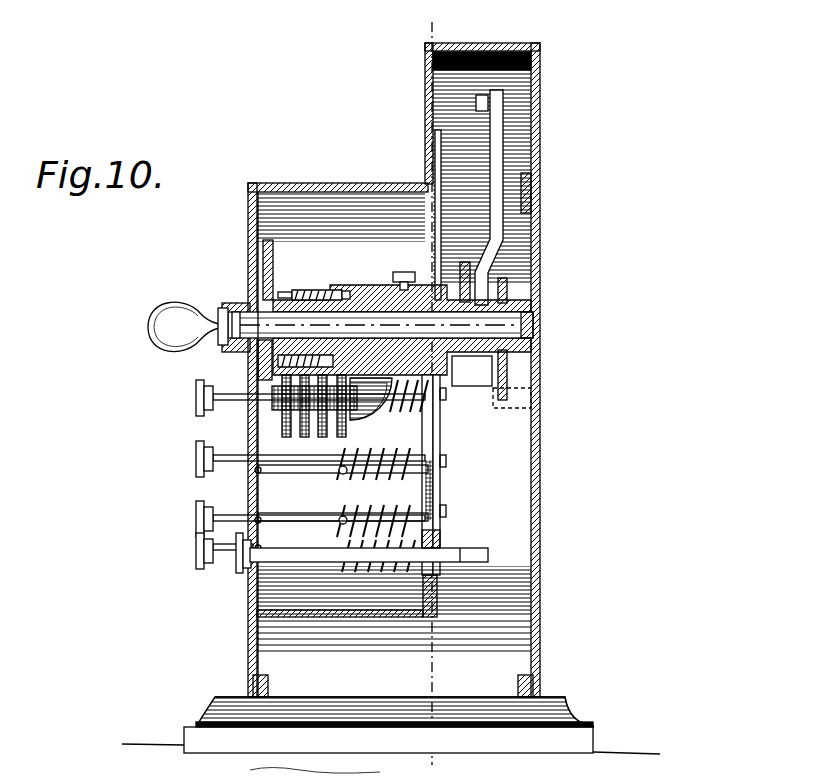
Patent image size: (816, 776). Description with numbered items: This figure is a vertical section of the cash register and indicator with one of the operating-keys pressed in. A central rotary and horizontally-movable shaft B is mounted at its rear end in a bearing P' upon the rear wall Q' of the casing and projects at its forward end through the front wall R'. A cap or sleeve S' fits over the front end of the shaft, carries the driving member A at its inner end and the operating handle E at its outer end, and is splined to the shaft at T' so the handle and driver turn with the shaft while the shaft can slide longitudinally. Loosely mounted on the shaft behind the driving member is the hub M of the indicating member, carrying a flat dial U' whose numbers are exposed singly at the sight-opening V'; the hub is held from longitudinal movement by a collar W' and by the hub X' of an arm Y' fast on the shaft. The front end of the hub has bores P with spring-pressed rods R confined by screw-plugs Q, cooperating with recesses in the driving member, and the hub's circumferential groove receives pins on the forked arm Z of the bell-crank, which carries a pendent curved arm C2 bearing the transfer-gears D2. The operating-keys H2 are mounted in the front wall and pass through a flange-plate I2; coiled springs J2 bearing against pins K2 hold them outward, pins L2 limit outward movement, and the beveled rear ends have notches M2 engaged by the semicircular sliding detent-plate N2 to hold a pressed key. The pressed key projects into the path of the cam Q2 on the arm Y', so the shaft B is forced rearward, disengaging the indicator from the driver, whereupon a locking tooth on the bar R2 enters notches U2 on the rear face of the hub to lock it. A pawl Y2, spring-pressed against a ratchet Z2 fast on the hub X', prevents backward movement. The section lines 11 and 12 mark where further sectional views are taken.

The section line 11- 11 is at (442, 16).
The section line 12- 12 is at (541, 62).
The rear wall of the casing Q' is at (552, 370).
The sight-opening V' is at (410, 209).
The arm Y' is at (526, 197).
The cam Q2 is at (482, 112).
The bar R2 is at (470, 275).
The ratchet Z2 is at (507, 292).
The hub or drum of the indicating member M is at (366, 286).
The bearing P' is at (432, 356).
The driving member A is at (273, 262).
The spring-pressed rods R is at (287, 283).
The screw-plugs Q is at (317, 284).
The bores P is at (341, 281).
The forked arm of the bell-crank Z is at (404, 272).
The cap or sleeve S' is at (278, 361).
The spline T' is at (231, 313).
The shaft B is at (516, 328).
The collar W' is at (380, 326).
The operating handle or crank E is at (165, 345).
The hub of the arm X' is at (472, 371).
The pawl Y2 is at (508, 378).
The notches U2 is at (455, 390).
The flat dial U' is at (448, 475).
The front wall of the casing R' is at (235, 444).
The transfer-gears D2 is at (326, 437).
The pendent curved arm C2 is at (371, 410).
The coiled springs J2 is at (410, 412).
The pins L2 is at (300, 466).
The operating-keys H2 is at (326, 462).
The pins K2 is at (343, 527).
The notches M2 is at (436, 566).
The sliding detent-plate N2 is at (441, 533).
The flange-plate I2 is at (430, 620).